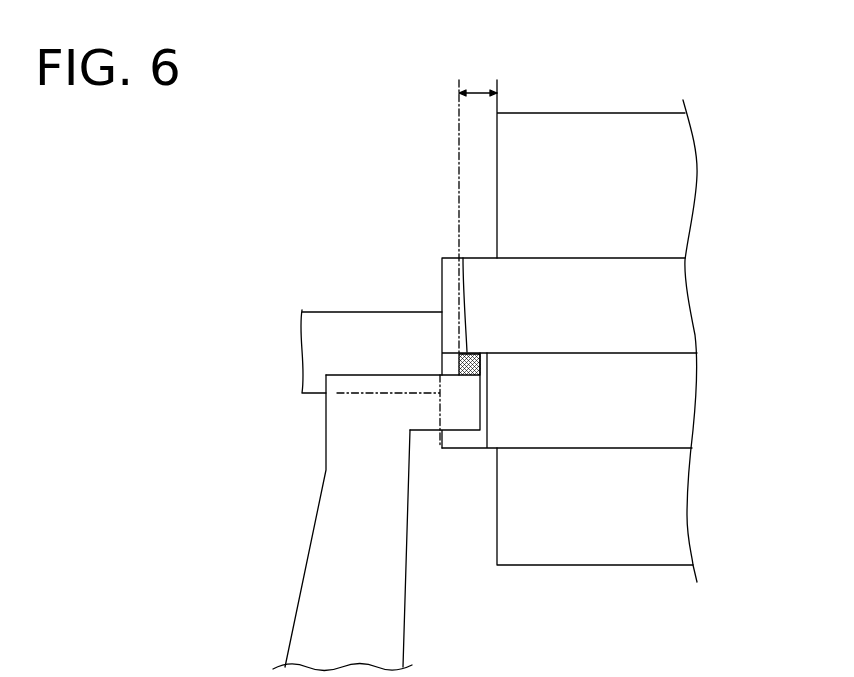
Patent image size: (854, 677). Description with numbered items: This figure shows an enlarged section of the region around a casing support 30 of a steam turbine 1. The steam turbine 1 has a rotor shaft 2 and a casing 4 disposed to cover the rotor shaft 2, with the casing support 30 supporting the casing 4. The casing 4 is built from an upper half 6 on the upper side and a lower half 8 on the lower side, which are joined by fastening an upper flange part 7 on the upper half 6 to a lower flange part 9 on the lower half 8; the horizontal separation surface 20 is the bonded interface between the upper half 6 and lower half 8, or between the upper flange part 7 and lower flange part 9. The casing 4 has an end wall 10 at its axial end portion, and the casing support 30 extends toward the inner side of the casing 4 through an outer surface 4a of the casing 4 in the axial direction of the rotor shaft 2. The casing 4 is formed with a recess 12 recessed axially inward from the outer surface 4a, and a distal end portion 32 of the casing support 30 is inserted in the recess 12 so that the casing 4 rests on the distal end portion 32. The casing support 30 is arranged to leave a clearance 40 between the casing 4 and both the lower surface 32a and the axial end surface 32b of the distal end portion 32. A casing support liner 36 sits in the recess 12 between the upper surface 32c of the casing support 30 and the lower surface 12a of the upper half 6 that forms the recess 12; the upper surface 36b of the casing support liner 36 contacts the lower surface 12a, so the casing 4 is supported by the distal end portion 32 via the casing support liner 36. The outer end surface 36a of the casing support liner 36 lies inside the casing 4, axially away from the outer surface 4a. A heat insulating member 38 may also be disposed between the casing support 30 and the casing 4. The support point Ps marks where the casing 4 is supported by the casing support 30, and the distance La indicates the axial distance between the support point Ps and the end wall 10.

The steam turbine 1 is at (771, 88).
The rotor shaft 2 is at (325, 333).
The casing 4 is at (690, 341).
The outer surface of the casing 4a is at (440, 311).
The upper half 6 is at (602, 142).
The upper flange part 7 is at (576, 278).
The lower half 8 is at (648, 548).
The lower flange part 9 is at (645, 425).
The end wall 10 is at (497, 137).
The recess 12 is at (441, 440).
The lower surface of the upper half 12a is at (440, 367).
The horizontal separation surface 20 is at (647, 352).
The casing support 30 is at (323, 508).
The distal end portion 32 is at (442, 448).
The lower surface of the distal end portion 32a is at (444, 443).
The axial end surface of the distal end portion 32b is at (487, 387).
The upper surface of the casing support 32c is at (440, 363).
The casing support liner 36 is at (458, 352).
The outer end surface of the casing support liner 36a is at (490, 362).
The upper surface of the casing support liner 36b is at (470, 352).
The heat insulating member 38 is at (465, 305).
The clearance 40 is at (468, 440).
The distance La is at (478, 205).
The support point Ps is at (440, 308).